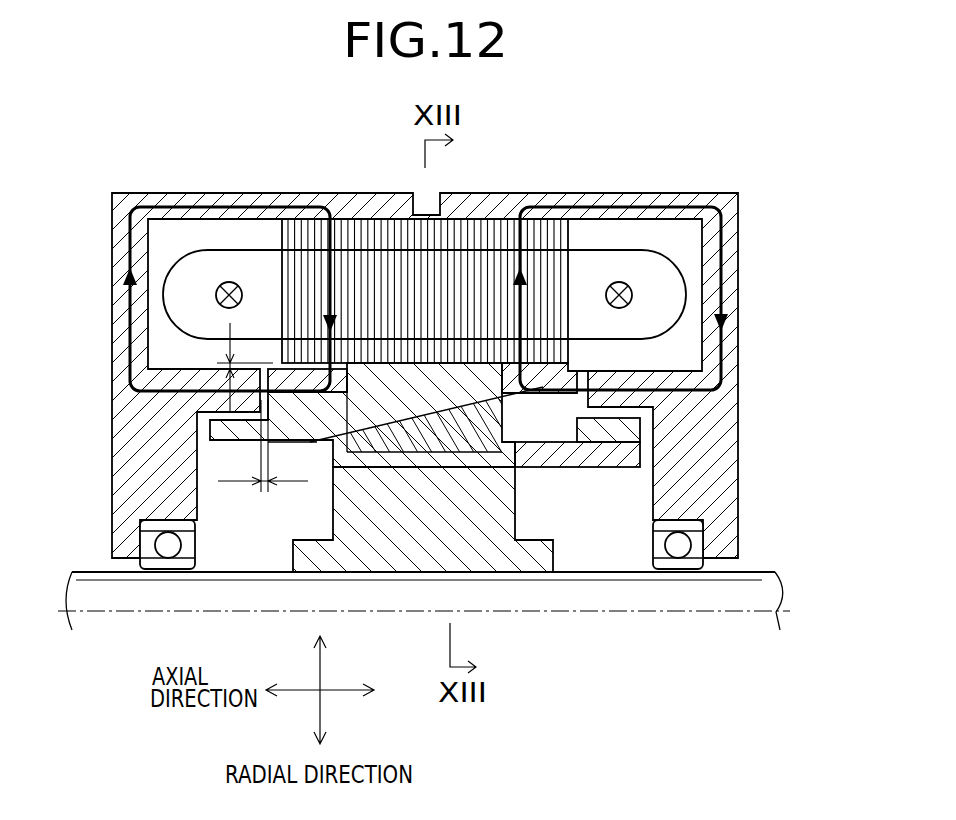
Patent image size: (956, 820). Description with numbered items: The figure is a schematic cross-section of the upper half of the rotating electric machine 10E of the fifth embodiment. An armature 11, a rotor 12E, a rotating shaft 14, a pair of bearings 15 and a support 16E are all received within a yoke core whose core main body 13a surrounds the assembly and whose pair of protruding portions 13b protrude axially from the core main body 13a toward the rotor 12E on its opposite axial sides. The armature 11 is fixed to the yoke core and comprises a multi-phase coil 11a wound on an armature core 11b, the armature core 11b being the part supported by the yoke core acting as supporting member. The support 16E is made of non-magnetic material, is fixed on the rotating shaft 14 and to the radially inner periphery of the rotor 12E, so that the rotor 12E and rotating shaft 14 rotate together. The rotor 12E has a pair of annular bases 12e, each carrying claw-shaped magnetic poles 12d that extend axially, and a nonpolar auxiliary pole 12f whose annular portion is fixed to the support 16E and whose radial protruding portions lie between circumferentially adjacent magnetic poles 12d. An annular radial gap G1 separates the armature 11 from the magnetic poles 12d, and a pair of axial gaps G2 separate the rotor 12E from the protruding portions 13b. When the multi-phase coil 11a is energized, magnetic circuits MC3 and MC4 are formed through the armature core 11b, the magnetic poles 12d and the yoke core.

The rotating electric machine 10E is at (190, 170).
The armature 11 is at (375, 138).
The multi-phase coil 11a is at (263, 280).
The armature core 11b is at (408, 283).
The rotor 12E is at (657, 138).
The claw-shaped magnetic poles 12d is at (430, 392).
The nonpolar auxiliary pole 12f is at (483, 428).
The annular bases 12e is at (600, 430).
The core main body 13a is at (728, 220).
The protruding portions 13b is at (207, 398).
The rotating shaft 14 is at (112, 597).
The bearings 15 is at (168, 547).
The support 16E is at (485, 572).
The magnetic circuit MC3 is at (127, 280).
The magnetic circuit MC4 is at (730, 295).
The radial gap G1 is at (224, 367).
The axial gaps G2 is at (263, 468).